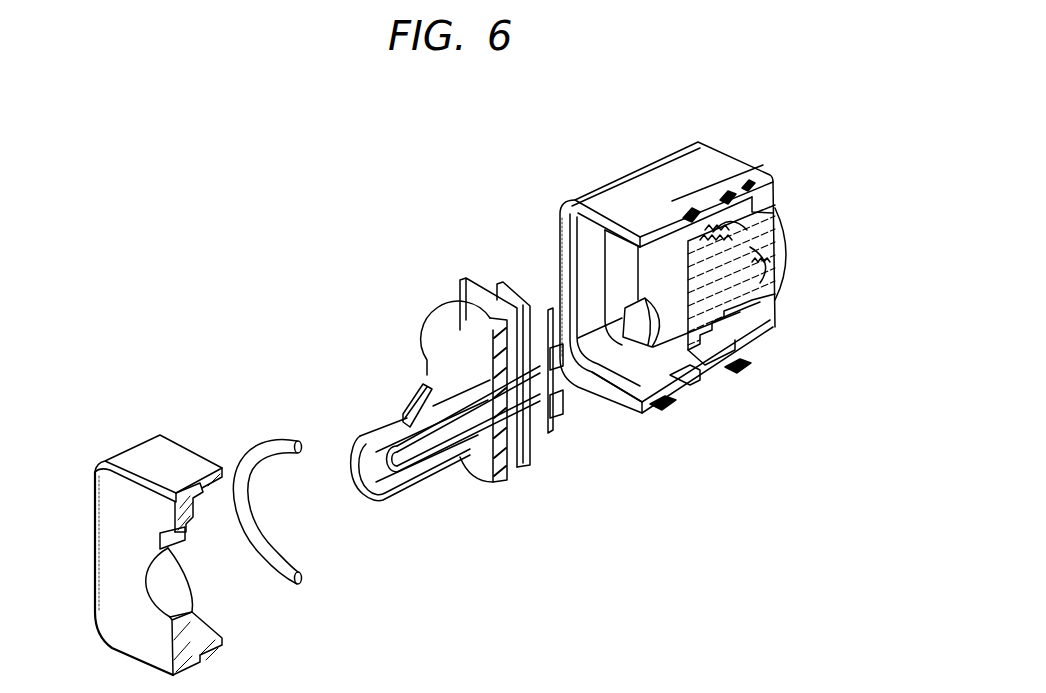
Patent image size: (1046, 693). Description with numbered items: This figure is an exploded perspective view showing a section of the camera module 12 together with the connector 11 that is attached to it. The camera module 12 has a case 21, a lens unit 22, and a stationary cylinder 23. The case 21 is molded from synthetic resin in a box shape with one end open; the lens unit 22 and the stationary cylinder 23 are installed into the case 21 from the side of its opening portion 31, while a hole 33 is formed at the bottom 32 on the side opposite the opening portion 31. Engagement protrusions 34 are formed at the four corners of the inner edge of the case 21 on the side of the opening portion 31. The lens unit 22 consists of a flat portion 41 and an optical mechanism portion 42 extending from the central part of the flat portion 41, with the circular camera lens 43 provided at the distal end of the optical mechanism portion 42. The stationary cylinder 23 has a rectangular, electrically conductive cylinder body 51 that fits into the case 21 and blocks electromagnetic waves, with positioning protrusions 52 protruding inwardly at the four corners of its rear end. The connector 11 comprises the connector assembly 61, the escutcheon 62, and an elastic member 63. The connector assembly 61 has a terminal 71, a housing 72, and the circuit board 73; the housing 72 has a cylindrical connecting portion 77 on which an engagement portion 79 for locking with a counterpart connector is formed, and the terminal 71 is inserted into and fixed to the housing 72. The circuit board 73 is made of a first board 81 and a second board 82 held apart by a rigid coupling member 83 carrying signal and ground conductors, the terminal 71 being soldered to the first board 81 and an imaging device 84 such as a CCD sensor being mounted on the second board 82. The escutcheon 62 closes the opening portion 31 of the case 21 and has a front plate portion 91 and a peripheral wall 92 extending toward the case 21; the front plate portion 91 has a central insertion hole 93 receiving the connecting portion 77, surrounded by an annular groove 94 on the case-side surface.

The connector 11 is at (263, 314).
The camera module 12 is at (655, 143).
The case 21 is at (617, 190).
The lens unit 22 is at (738, 212).
The stationary cylinder 23 is at (648, 390).
The opening portion 31 is at (651, 396).
The bottom 32 is at (770, 197).
The hole 33 is at (775, 216).
The engagement protrusions 34 is at (567, 217).
The flat portion 41 is at (713, 363).
The optical mechanism portion 42 is at (752, 322).
The camera lens 43 is at (787, 253).
The cylinder body 51 is at (697, 377).
The positioning protrusions 52 is at (658, 340).
The connector assembly 61 is at (424, 316).
The escutcheon 62 is at (125, 434).
The elastic member 63 is at (264, 423).
The terminal 71 is at (469, 385).
The housing 72 is at (449, 472).
The circuit board 73 is at (497, 186).
The connecting portion 77 is at (402, 497).
The engagement portion 79 is at (404, 400).
The first board 81 is at (462, 277).
The second board 82 is at (500, 283).
The coupling member 83 is at (529, 425).
The imaging device 84 is at (550, 420).
The front plate portion 91 is at (123, 633).
The peripheral wall 92 is at (205, 660).
The insertion hole 93 is at (157, 596).
The annular groove 94 is at (201, 492).